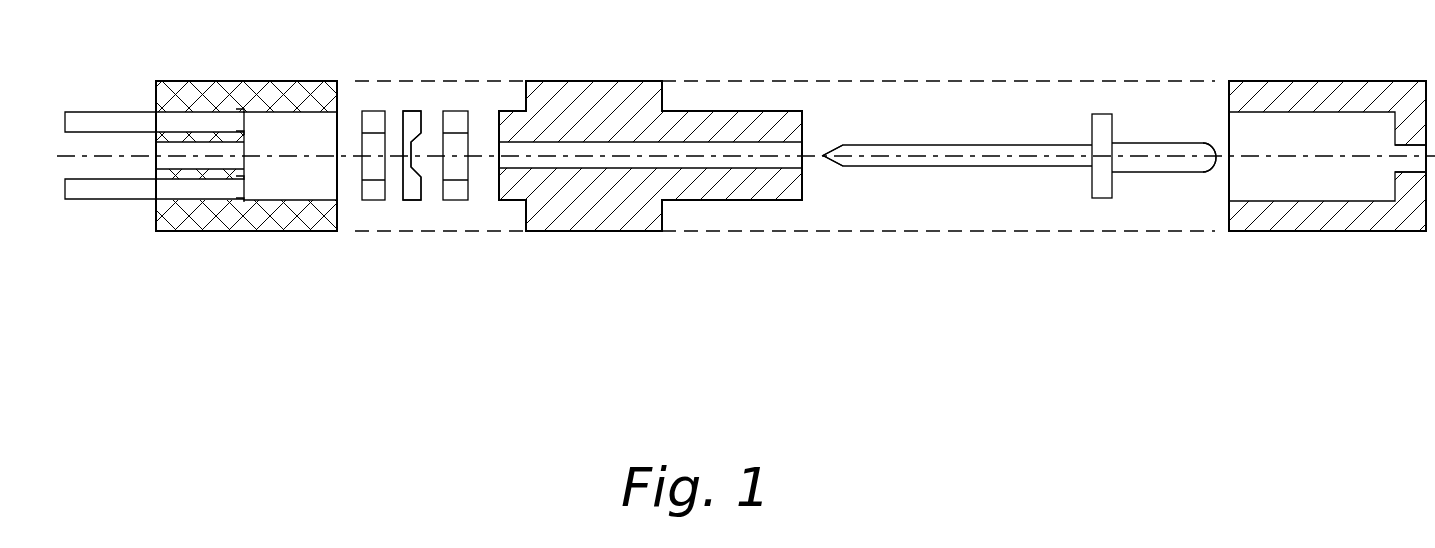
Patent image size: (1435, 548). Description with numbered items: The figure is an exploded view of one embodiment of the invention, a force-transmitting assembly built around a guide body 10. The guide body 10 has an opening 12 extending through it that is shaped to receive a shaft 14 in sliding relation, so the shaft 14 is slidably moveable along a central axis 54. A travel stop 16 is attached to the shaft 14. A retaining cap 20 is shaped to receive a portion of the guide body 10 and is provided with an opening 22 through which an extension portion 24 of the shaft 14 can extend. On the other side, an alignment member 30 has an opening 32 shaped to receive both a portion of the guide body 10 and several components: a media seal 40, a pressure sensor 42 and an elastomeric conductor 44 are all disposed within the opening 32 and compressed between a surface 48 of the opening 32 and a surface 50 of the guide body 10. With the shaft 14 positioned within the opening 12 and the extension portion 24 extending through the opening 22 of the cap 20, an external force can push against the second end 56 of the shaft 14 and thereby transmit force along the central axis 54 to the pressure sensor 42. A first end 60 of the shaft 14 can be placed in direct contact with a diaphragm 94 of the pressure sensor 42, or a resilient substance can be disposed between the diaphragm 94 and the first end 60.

The guide body 10 is at (578, 90).
The opening 12 is at (782, 150).
The shaft 14 is at (917, 153).
The travel stop 16 is at (1103, 132).
The retaining cap 20 is at (1280, 213).
The opening 22 is at (1395, 157).
The extension portion 24 is at (1153, 145).
The alignment member 30 is at (183, 217).
The opening 32 is at (322, 128).
The media seal 40 is at (457, 122).
The pressure sensor 42 is at (413, 120).
The elastomeric conductor 44 is at (370, 188).
The surface 48 is at (245, 130).
The surface 50 is at (499, 187).
The central axis 54 is at (87, 155).
The second end 56 is at (1210, 172).
The first end 60 is at (830, 160).
The diaphragm 94 is at (417, 167).